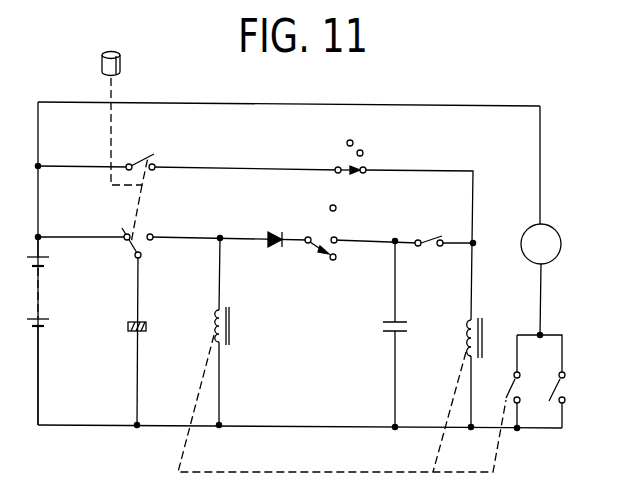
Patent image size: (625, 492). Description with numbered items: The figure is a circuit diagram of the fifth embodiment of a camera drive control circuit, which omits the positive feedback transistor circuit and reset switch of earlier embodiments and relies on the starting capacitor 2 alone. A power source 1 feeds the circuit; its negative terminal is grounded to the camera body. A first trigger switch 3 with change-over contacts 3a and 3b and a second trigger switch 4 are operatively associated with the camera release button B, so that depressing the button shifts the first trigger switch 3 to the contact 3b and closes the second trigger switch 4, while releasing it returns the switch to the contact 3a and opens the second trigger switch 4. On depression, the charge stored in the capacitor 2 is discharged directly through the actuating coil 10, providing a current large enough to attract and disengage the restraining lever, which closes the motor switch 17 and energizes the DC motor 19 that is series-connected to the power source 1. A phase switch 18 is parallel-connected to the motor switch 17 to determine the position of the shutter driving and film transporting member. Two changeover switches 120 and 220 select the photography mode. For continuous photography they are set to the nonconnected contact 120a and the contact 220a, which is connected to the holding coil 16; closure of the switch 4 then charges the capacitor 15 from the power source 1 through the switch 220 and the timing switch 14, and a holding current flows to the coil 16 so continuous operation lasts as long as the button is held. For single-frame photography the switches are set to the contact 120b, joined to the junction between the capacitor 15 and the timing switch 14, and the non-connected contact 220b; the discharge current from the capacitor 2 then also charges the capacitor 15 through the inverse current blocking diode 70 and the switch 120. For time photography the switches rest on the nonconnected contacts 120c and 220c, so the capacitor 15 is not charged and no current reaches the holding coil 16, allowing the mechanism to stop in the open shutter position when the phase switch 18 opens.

The release button B is at (123, 62).
The power source 1 is at (46, 310).
The starting capacitor 2 is at (148, 325).
The first trigger switch 3 is at (130, 253).
The contact 3a is at (124, 232).
The contact 3b is at (150, 234).
The second trigger switch 4 is at (147, 160).
The first electromagnet coil 10 is at (222, 345).
The timing switch 14 is at (432, 239).
The capacitor 15 is at (382, 323).
The second electromagnet coil 16 is at (476, 318).
The motor switch 17 is at (514, 378).
The phase switch 18 is at (558, 376).
The DC motor 19 is at (544, 224).
The inverse current blocking diode 70 is at (274, 248).
The changeover switch 120 is at (320, 252).
The nonconnected contact 120a is at (332, 238).
The contact 120b is at (335, 260).
The nonconnected contact 120c is at (330, 208).
The changeover switch 220 is at (337, 167).
The contact 220a is at (363, 174).
The non-connected contact 220b is at (363, 153).
The nonconnected contact 220c is at (352, 141).